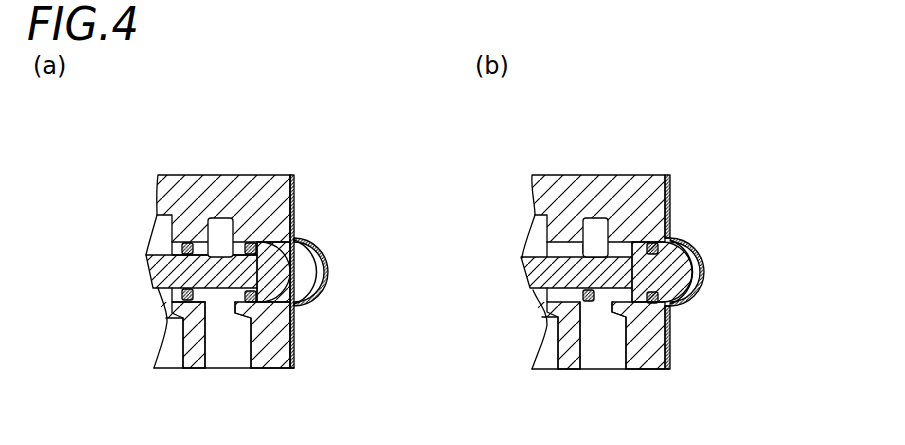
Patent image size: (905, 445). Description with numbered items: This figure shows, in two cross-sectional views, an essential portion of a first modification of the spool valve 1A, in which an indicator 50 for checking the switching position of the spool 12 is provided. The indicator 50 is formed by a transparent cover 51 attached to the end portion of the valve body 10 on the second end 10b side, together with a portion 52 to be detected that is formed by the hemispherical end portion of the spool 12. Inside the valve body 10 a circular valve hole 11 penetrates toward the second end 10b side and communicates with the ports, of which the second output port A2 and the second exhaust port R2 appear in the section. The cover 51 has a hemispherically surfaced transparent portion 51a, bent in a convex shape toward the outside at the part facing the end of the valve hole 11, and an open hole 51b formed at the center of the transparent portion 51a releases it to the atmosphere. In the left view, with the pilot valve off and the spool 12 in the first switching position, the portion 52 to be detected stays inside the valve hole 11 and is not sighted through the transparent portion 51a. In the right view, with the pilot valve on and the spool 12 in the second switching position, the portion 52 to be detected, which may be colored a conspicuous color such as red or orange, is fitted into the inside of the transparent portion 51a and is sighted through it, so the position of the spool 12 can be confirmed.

The spool valve 1A is at (132, 107).
The valve body 10 is at (202, 193).
The second end 10b is at (295, 188).
The valve hole 11 is at (153, 258).
The spool 12 is at (162, 275).
The indicator 50 is at (340, 232).
The transparent cover 51 is at (295, 210).
The transparent portion 51a is at (322, 296).
The open hole 51b is at (329, 273).
The portion to be detected 52 is at (262, 277).
The second output port A2 is at (173, 347).
The second exhaust port R2 is at (232, 347).